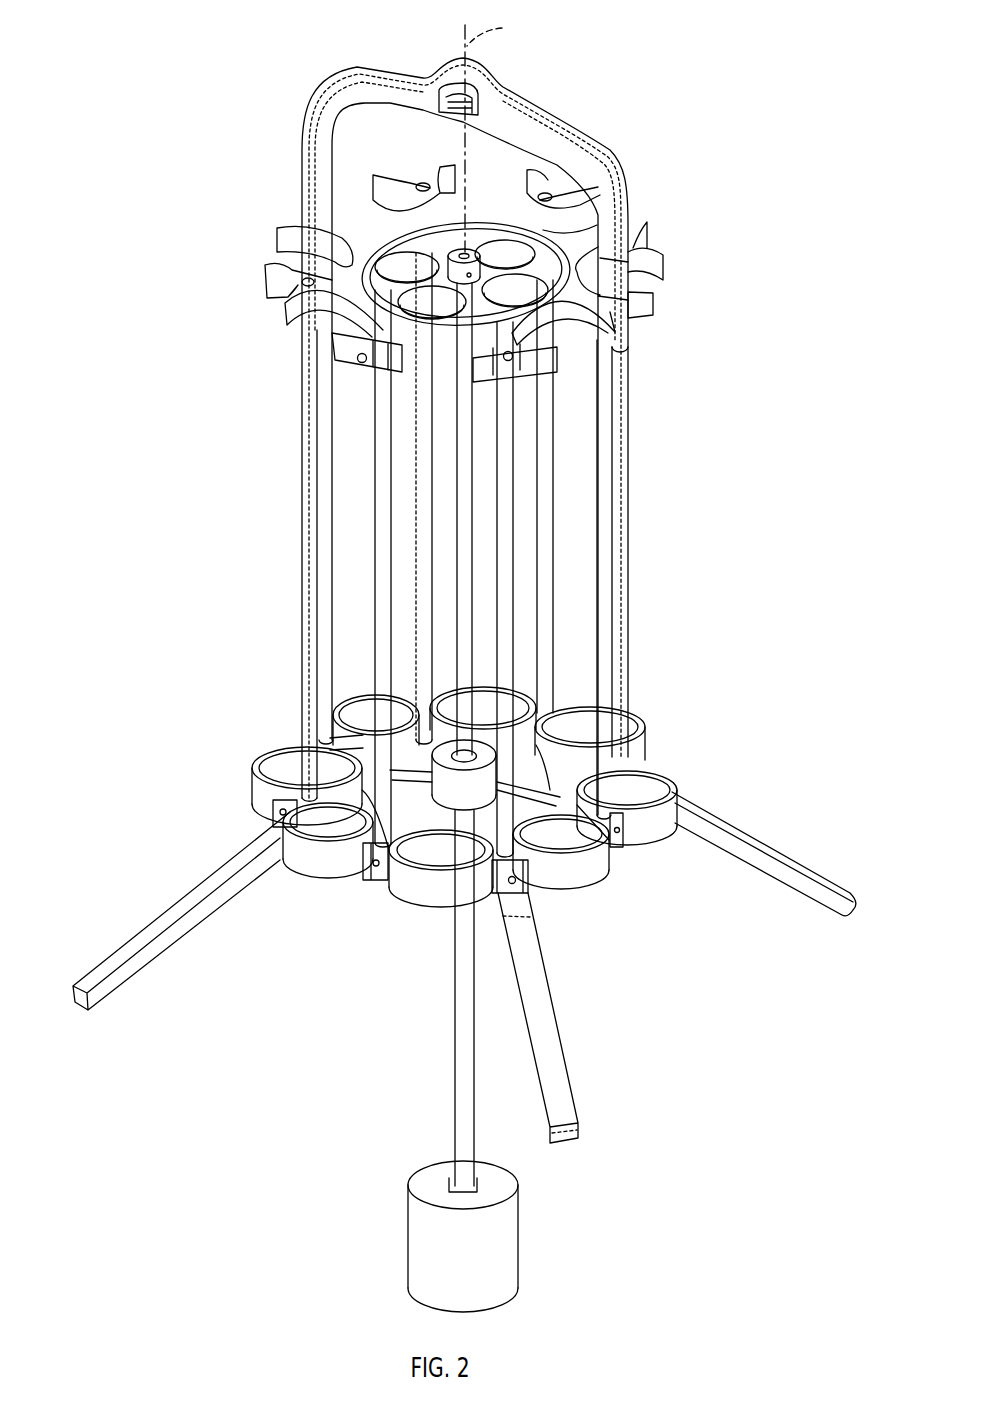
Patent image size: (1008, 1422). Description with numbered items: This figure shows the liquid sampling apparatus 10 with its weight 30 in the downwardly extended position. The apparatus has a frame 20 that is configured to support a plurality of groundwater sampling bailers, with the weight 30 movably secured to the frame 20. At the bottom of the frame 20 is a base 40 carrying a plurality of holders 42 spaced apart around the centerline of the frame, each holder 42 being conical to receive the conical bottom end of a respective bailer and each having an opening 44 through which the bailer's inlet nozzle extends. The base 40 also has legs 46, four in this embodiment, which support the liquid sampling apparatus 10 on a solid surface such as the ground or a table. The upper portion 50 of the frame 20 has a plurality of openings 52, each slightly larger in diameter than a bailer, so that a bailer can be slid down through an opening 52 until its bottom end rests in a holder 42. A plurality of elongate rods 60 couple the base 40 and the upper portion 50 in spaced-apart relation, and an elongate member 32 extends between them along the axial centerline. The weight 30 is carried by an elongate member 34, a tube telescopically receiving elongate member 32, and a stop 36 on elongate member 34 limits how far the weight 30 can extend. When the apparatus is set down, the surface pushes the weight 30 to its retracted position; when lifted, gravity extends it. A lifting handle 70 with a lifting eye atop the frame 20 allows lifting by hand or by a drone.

The liquid sampling apparatus 10 is at (464, 656).
The frame 20 is at (477, 457).
The weight 30 is at (430, 1243).
The elongate member 32 is at (463, 440).
The elongate member 34 is at (455, 1062).
The stop 36 is at (487, 783).
The base 40 is at (464, 891).
The holder 42 is at (636, 730).
The opening 44 is at (265, 797).
The leg 46 is at (165, 918).
The upper portion 50 is at (484, 259).
The opening 52 is at (385, 190).
The elongate rod 60 is at (323, 397).
The lifting handle 70 is at (592, 160).